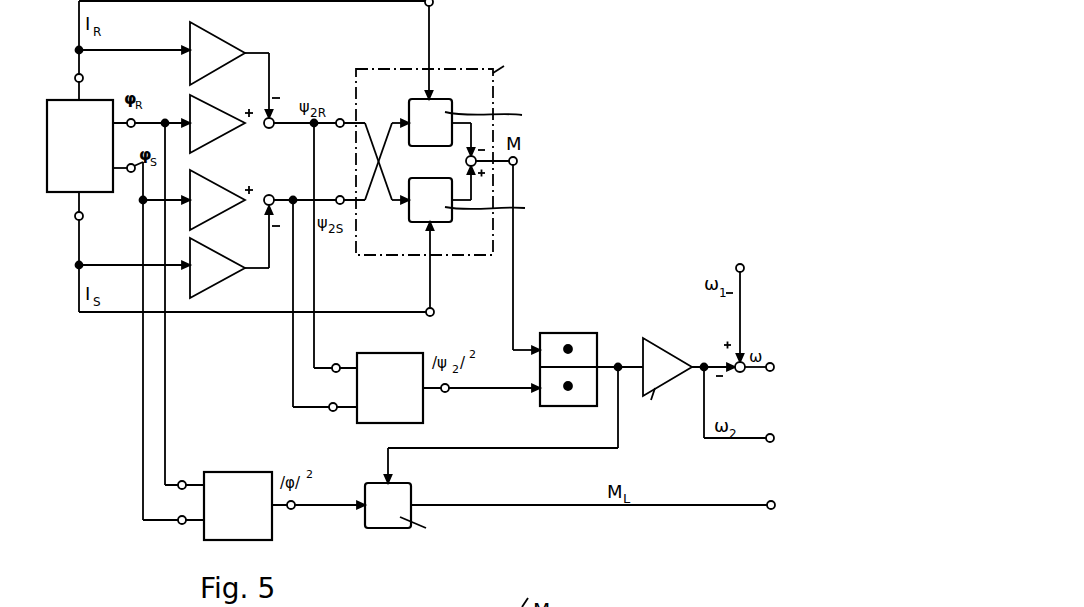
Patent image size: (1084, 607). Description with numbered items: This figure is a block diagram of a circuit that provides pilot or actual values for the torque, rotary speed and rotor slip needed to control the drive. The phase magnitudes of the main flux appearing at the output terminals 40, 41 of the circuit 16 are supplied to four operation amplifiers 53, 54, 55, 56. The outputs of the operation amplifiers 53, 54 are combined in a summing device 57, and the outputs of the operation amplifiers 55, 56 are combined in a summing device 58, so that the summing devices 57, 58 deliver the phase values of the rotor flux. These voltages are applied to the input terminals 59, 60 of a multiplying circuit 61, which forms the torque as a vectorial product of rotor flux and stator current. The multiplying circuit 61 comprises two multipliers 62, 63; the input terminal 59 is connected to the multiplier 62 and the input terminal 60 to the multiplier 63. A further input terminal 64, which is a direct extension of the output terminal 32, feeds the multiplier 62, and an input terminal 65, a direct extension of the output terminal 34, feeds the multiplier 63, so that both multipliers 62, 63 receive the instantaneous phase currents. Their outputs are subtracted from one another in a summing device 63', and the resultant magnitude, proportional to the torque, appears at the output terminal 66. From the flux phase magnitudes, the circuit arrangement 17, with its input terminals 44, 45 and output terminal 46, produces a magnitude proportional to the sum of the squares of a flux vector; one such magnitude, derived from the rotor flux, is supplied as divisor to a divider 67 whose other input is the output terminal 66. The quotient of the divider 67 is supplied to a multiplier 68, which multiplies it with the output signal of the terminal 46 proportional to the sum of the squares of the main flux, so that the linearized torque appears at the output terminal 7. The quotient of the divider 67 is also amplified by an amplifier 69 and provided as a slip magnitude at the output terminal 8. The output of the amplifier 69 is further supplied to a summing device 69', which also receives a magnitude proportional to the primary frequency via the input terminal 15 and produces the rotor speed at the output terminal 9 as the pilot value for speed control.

The output terminal 7 is at (770, 493).
The output terminal 8 is at (770, 426).
The output terminal 9 is at (770, 380).
The input terminal 15 is at (742, 255).
The circuit 16 is at (80, 146).
The circuit arrangement 17 is at (313, 446).
The output terminal 32 is at (92, 78).
The output terminal 34 is at (92, 217).
The output terminal 40 is at (131, 134).
The output terminal 41 is at (129, 179).
The input terminal 44 is at (259, 416).
The input terminal 45 is at (256, 477).
The output terminal 46 is at (372, 462).
The operation amplifier 53 is at (217, 70).
The operation amplifier 54 is at (216, 140).
The operation amplifier 55 is at (216, 217).
The operation amplifier 56 is at (216, 285).
The summing device 57 is at (273, 128).
The summing device 58 is at (273, 196).
The input terminal 59 is at (340, 189).
The input terminal 60 is at (340, 137).
The multiplying circuit 61 is at (493, 97).
The multiplier 62 is at (449, 105).
The multiplier 63 is at (505, 210).
The summing device 63' is at (456, 163).
The input terminal 64 is at (441, 8).
The input terminal 65 is at (443, 314).
The output terminal 66 is at (526, 163).
The divider 67 is at (545, 306).
The multiplier 68 is at (383, 528).
The amplifier 69 is at (661, 373).
The summing device 69' is at (720, 354).